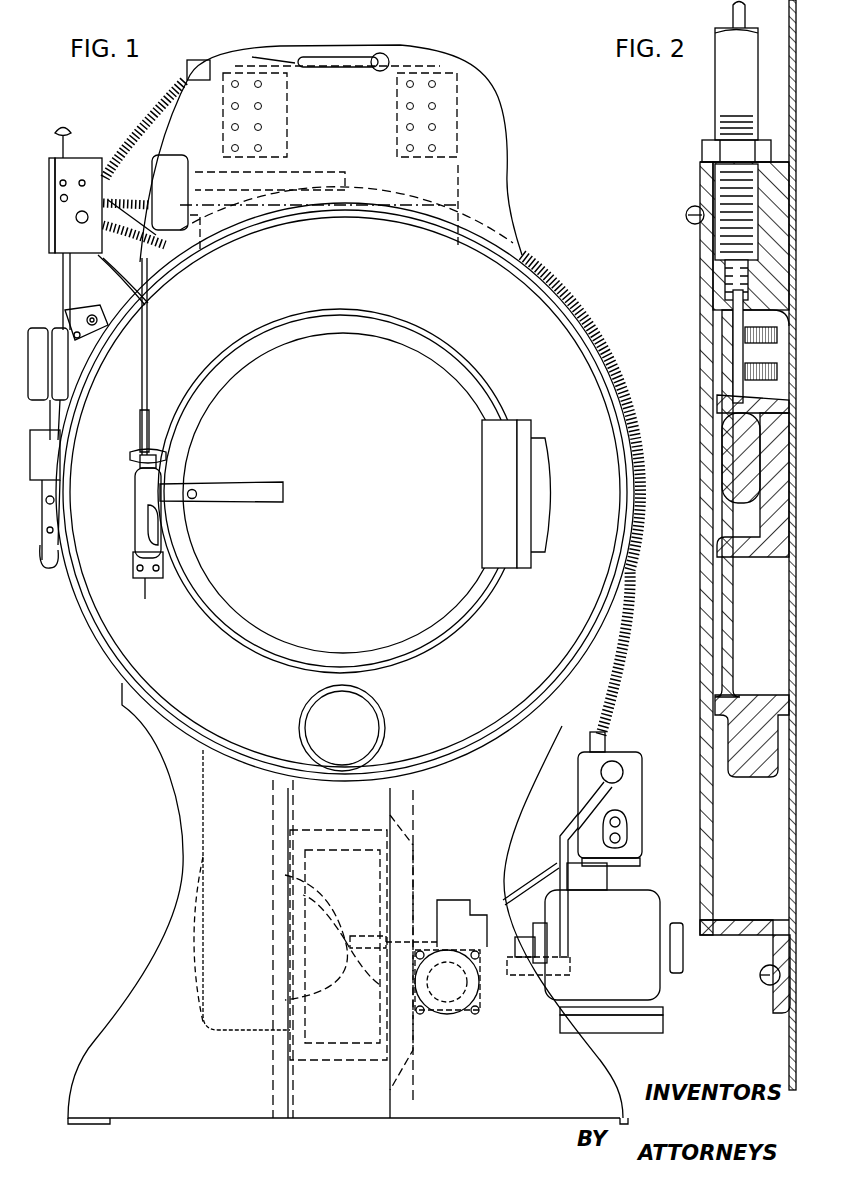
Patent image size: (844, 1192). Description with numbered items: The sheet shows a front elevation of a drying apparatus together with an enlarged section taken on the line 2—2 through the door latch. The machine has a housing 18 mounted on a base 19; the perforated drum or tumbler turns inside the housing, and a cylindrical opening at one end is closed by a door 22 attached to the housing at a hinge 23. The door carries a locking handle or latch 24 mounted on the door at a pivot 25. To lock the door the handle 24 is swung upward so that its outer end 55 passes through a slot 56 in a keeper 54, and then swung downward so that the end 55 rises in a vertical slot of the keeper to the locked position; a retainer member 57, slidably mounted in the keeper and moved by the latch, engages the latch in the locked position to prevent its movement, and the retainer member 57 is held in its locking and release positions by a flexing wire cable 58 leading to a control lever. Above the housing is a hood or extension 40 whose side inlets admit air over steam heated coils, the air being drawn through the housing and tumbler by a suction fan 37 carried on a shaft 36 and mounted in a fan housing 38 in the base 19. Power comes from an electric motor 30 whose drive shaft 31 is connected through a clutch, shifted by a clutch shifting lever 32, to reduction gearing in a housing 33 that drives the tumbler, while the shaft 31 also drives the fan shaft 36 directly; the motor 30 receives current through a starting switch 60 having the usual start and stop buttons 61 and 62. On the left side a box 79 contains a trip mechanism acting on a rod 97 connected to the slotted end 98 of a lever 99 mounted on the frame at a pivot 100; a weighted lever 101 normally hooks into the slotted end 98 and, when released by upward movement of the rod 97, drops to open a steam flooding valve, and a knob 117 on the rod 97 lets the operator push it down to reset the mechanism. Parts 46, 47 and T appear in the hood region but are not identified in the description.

In FIG. 1, the housing 18 is at (120, 645).
In FIG. 1, the base 19 is at (147, 722).
In FIG. 1, the door 22 is at (455, 395).
In FIG. 1, the hinge 23 is at (525, 425).
In FIG. 1, the locking handle 24 is at (218, 480).
In FIG. 1, the pivot 25 is at (197, 500).
In FIG. 1, the electric motor 30 is at (668, 985).
In FIG. 1, the drive shaft 31 is at (525, 940).
In FIG. 1, the clutch shifting lever 32 is at (580, 820).
In FIG. 1, the reduction gearing housing 33 is at (445, 1013).
In FIG. 1, the shaft 36 is at (345, 975).
In FIG. 1, the suction fan 37 is at (335, 888).
In FIG. 1, the fan housing 38 is at (312, 843).
In FIG. 1, the hood 40 is at (500, 160).
In FIG. 1, the bar 46 is at (335, 60).
In FIG. 1, the bracket 47 is at (268, 62).
In FIG. 1, the keeper 54 is at (136, 500).
In FIG. 2, the keeper 54 is at (702, 378).
In FIG. 2, the outer end 55 is at (737, 452).
In FIG. 1, the slot 56 is at (148, 518).
In FIG. 2, the retainer member 57 is at (740, 540).
In FIG. 1, the flexing wire cable 58 is at (148, 322).
In FIG. 2, the flexing wire cable 58 is at (730, 302).
In FIG. 1, the starting switch 60 is at (615, 755).
In FIG. 1, the start button 61 is at (622, 820).
In FIG. 1, the stop button 62 is at (622, 838).
In FIG. 1, the box 79 is at (92, 158).
In FIG. 1, the rod 97 is at (62, 272).
In FIG. 1, the slotted end 98 is at (68, 312).
In FIG. 1, the lever 99 is at (78, 300).
In FIG. 1, the pivot 100 is at (96, 322).
In FIG. 1, the weighted lever 101 is at (40, 365).
In FIG. 1, the knob 117 is at (60, 128).
In FIG. 1, the section line 2 is at (135, 435).
In FIG. 1, the thermostat T is at (152, 190).